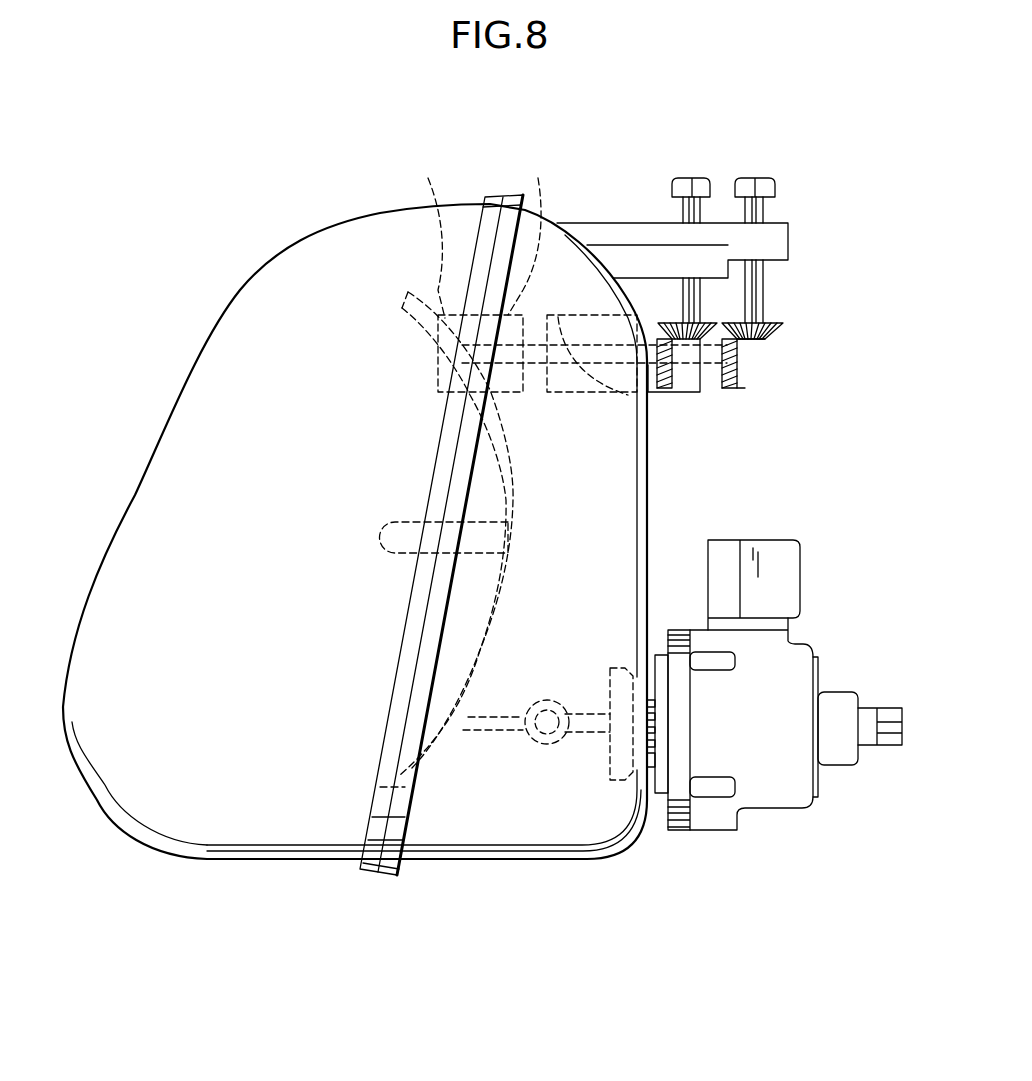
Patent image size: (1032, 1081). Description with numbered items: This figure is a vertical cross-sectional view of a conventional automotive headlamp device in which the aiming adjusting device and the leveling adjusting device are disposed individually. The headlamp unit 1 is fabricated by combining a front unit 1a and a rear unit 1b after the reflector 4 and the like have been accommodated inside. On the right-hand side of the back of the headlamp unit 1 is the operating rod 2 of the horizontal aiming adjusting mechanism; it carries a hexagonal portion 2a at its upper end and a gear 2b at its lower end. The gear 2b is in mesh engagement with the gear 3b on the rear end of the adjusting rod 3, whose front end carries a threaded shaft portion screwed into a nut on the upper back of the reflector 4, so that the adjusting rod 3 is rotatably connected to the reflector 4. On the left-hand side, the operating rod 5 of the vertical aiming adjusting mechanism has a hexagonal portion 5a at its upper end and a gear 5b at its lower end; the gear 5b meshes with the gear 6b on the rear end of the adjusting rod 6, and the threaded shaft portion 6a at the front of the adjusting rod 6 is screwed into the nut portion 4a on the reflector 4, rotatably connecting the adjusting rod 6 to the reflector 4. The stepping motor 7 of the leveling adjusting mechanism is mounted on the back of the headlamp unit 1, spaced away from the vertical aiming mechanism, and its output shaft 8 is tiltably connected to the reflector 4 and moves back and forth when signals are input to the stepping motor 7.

The headlamp unit 1 is at (340, 230).
The front unit 1a is at (122, 785).
The rear unit 1b is at (508, 840).
The operating rod 2 is at (763, 307).
The hexagonal portion 2a is at (754, 178).
The gear 2b is at (782, 332).
The adjusting rod 3 is at (737, 353).
The gear 3b is at (725, 385).
The reflector 4 is at (522, 482).
The nut portion 4a is at (422, 235).
The operating rod 5 is at (680, 300).
The hexagonal portion 5a is at (692, 178).
The gear 5b is at (707, 323).
The adjusting rod 6 is at (640, 396).
The threaded shaft portion 6a is at (528, 233).
The gear 6b is at (665, 385).
The stepping motor 7 is at (782, 793).
The output shaft 8 is at (580, 737).